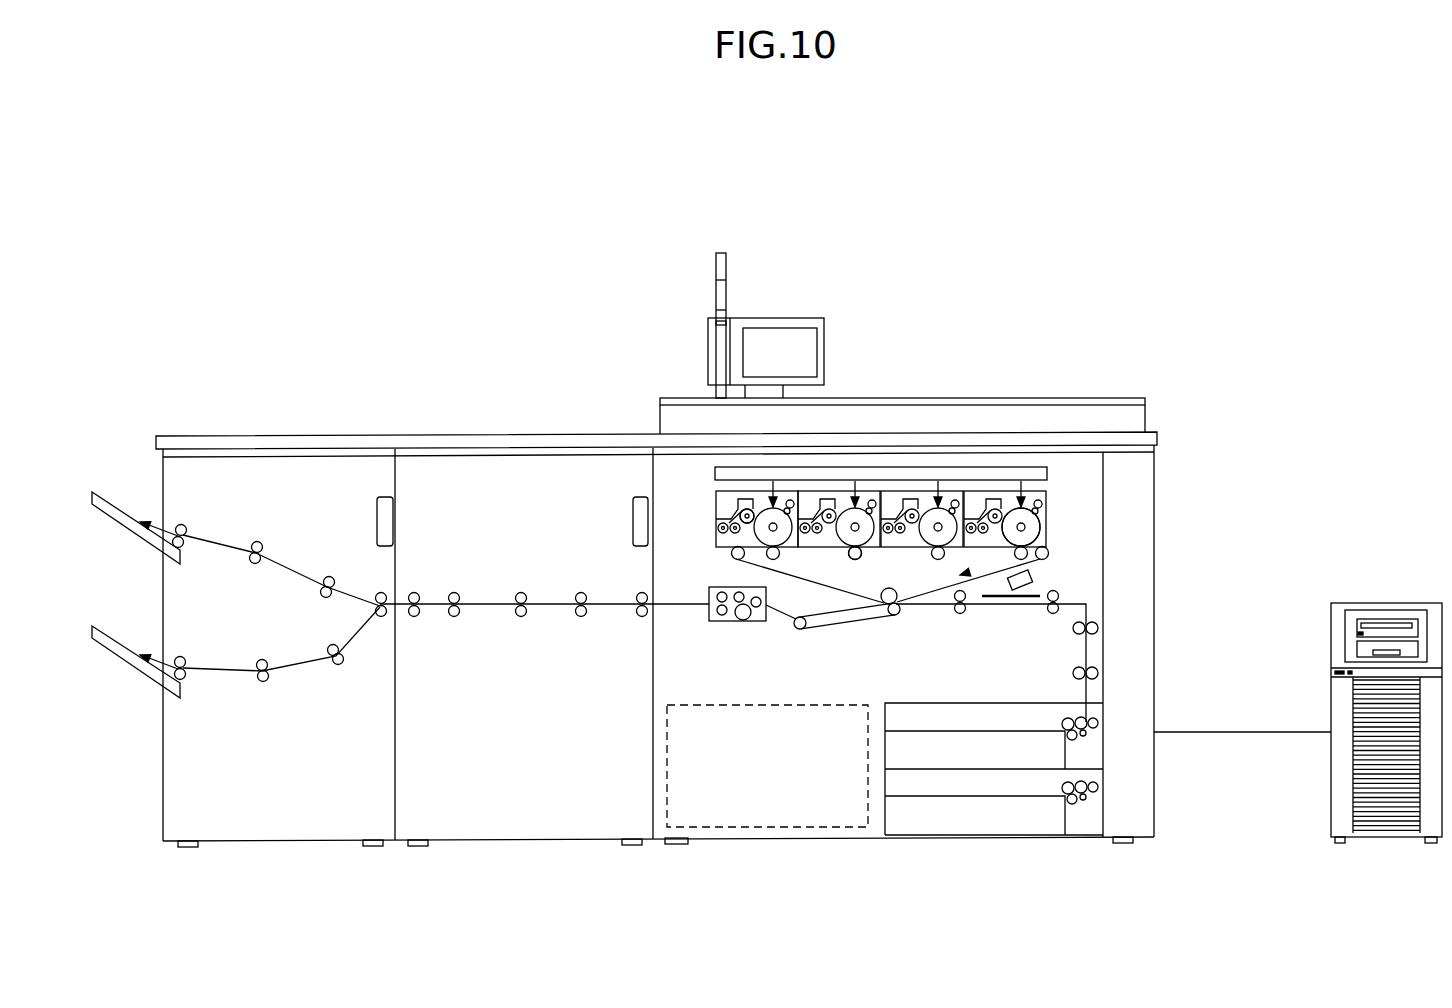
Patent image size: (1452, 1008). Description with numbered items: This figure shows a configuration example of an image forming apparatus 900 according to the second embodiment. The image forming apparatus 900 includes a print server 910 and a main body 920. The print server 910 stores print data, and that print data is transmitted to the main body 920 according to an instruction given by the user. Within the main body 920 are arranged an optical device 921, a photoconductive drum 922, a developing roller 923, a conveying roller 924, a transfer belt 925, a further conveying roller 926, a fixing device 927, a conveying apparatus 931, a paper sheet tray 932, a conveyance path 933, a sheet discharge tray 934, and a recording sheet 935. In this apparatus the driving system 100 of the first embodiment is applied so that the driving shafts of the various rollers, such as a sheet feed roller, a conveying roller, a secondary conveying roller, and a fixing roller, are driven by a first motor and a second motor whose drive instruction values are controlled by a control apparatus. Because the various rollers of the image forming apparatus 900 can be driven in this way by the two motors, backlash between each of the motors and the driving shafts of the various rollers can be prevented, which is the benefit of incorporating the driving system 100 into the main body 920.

The image forming apparatus 900 is at (1381, 208).
The print server 910 is at (1378, 603).
The main body 920 is at (1157, 473).
The optical device 921 is at (1048, 470).
The photoconductive drum 922 is at (1042, 525).
The developing roller 923 is at (739, 511).
The conveying roller 924 is at (862, 552).
The transfer belt 925 is at (835, 590).
The conveying roller 926 is at (897, 612).
The fixing device 927 is at (712, 588).
The conveying apparatus 931 is at (1096, 719).
The paper sheet tray 932 is at (967, 733).
The conveyance path 933 is at (1087, 606).
The sheet discharge tray 934 is at (112, 500).
The recording sheet 935 is at (1038, 594).
The driving system 100 is at (772, 804).